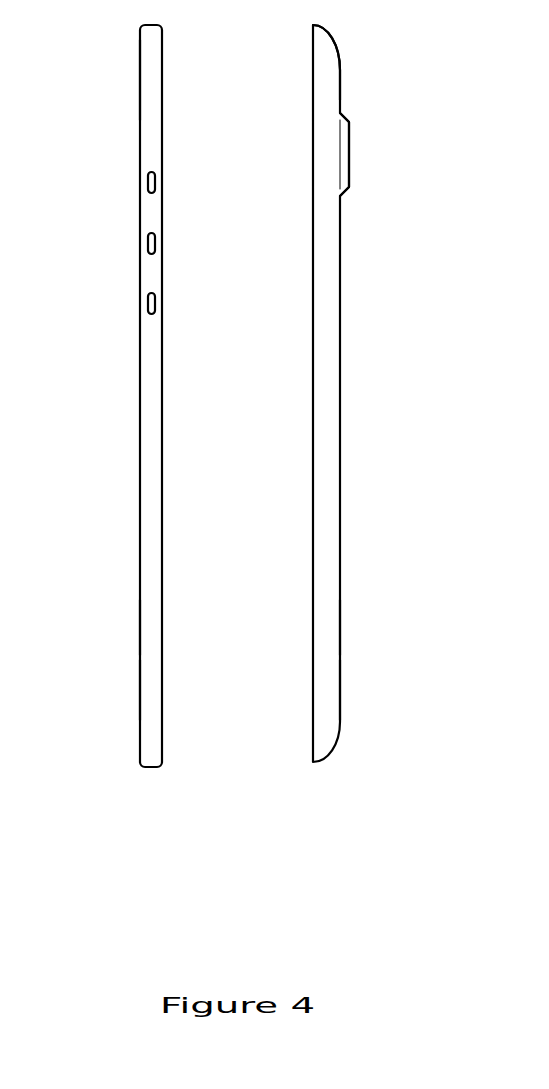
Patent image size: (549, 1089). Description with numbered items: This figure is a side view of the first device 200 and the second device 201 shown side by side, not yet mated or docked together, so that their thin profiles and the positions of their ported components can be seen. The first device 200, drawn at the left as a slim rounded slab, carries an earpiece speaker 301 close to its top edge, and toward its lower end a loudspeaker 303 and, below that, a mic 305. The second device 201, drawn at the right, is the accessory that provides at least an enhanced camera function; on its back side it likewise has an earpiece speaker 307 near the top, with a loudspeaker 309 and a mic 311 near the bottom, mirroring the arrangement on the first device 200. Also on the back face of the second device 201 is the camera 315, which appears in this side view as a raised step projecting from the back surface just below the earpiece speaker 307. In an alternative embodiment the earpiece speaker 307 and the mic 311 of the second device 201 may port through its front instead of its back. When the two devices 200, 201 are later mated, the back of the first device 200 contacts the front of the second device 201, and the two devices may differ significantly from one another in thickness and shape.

The first device 200 is at (106, 853).
The second device 201 is at (376, 852).
The earpiece speaker 301 is at (140, 77).
The loudspeaker 303 is at (140, 636).
The mic 305 is at (140, 686).
The earpiece speaker 307 is at (340, 78).
The loudspeaker 309 is at (340, 637).
The mic 311 is at (340, 687).
The camera 315 is at (362, 155).